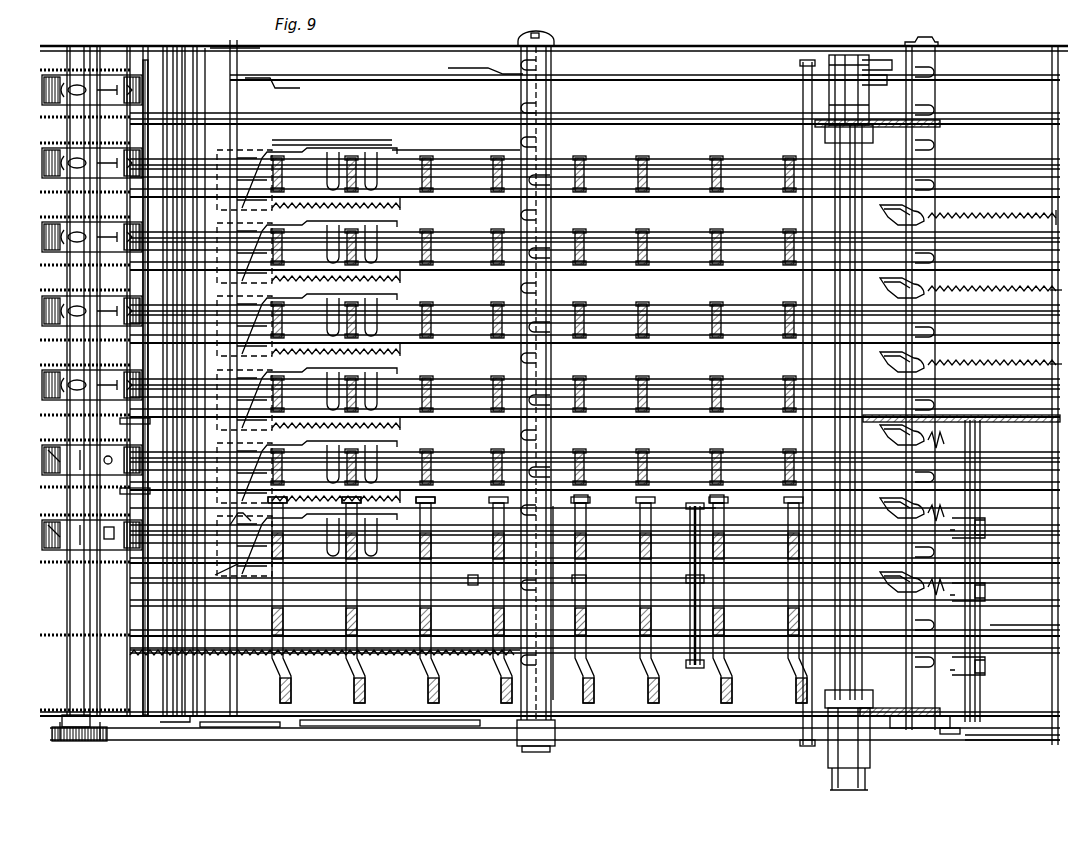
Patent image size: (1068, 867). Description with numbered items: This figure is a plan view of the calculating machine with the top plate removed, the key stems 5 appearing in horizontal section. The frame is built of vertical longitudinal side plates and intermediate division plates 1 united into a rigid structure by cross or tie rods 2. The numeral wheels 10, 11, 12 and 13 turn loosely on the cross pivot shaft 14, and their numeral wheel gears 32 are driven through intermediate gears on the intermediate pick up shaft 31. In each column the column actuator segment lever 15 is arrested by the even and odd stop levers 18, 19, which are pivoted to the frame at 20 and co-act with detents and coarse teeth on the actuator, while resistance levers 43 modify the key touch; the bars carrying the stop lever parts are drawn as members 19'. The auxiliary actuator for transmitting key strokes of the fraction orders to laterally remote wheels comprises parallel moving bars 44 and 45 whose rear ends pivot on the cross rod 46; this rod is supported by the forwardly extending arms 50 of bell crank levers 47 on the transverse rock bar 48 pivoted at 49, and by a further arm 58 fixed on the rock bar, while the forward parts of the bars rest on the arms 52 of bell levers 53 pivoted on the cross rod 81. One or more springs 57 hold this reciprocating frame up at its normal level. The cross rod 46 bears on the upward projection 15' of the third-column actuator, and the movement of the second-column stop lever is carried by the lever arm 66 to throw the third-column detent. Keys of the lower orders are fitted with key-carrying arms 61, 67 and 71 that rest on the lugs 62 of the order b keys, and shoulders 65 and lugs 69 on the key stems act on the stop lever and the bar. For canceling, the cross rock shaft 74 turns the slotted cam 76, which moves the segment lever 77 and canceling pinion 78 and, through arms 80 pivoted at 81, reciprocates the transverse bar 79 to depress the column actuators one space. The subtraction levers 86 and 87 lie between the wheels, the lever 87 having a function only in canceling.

The side plates and division plates 1 is at (437, 47).
The cross or tie rods 2 is at (205, 680).
The key stems 5 is at (430, 250).
The fraction numeral wheel 10 is at (44, 535).
The fraction numeral wheel 11 is at (44, 462).
The numeral wheel 12 is at (44, 163).
The numeral wheel 13 is at (44, 90).
The cross pivot shaft 14 is at (95, 44).
The column actuator segment lever 15 is at (698, 318).
The upward projection on column actuator 15' is at (690, 532).
The even stop lever 18 is at (455, 160).
The odd stop lever 19 is at (655, 274).
The bar 19' is at (595, 406).
The stop lever pivot 20 is at (233, 44).
The intermediate pick up shaft 31 is at (72, 603).
The numeral wheel gears 32 is at (50, 140).
The resistance levers 43 is at (885, 208).
The parallel moving bar 44 is at (612, 650).
The parallel moving bar 45 is at (610, 570).
The cross rod 46 is at (690, 618).
The bell crank levers 47 is at (988, 590).
The transverse rock bar 48 is at (988, 627).
The rock bar pivot 49 is at (978, 422).
The forwardly extending arm 50 is at (905, 650).
The forwardly extending arms 52 is at (305, 585).
The bell levers 53 is at (553, 665).
The springs 57 is at (215, 650).
The forwardly extending arm 58 is at (988, 526).
The arm 61 is at (775, 628).
The lug or shoulder 62 is at (445, 500).
The shoulder 65 is at (262, 585).
The lever arm 66 is at (230, 578).
The arm 67 is at (550, 512).
The lugs 69 is at (490, 578).
The arm 71 is at (600, 514).
The cross rock shaft 74 is at (862, 160).
The slotted cam 76 is at (960, 730).
The segment lever 77 is at (243, 730).
The canceling pinion 78 is at (84, 742).
The transverse bar 79 is at (808, 60).
The arms 80 is at (709, 81).
The pivot cross rod 81 is at (538, 40).
The subtraction lever 86 is at (127, 427).
The subtraction lever 87 is at (127, 497).